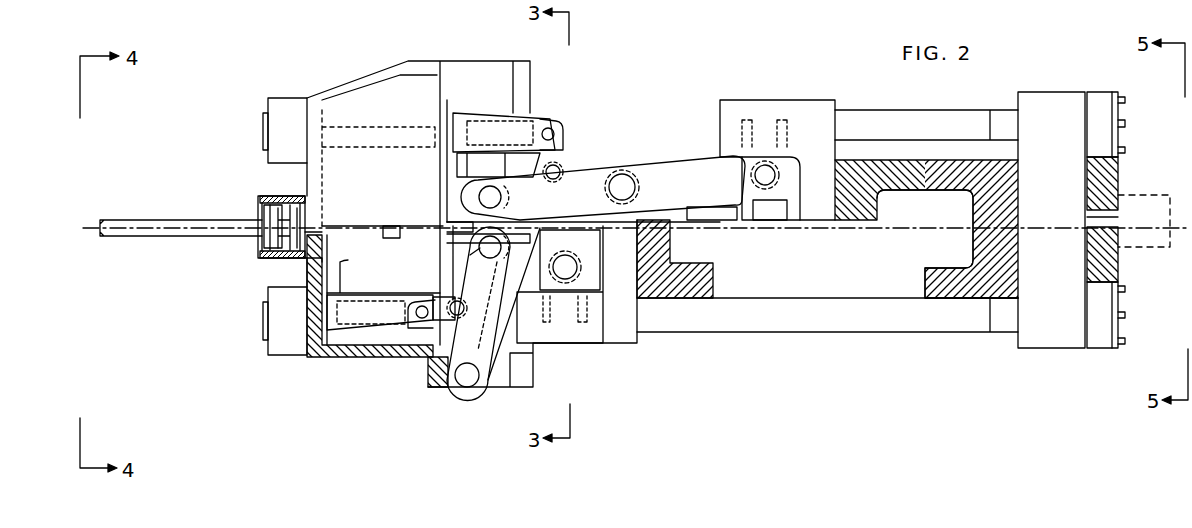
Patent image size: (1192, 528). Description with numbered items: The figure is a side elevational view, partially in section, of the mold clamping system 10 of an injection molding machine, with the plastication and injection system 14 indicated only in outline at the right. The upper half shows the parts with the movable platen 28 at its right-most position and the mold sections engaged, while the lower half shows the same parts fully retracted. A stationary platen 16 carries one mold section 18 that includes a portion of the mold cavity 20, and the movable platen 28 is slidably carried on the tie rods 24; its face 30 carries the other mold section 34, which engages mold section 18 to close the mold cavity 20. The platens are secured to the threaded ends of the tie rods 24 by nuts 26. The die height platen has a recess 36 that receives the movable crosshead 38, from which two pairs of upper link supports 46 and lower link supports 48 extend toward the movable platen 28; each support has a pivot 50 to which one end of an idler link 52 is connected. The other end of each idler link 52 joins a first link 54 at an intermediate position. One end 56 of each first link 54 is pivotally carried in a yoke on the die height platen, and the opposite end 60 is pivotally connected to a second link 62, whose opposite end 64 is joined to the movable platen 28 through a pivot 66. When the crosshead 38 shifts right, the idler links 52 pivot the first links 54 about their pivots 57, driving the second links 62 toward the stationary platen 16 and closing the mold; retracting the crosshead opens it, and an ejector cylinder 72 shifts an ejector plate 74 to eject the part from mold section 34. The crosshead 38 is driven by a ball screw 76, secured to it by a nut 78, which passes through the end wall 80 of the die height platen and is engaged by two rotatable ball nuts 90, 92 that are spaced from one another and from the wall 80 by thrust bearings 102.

The mold clamping system 10 is at (399, 51).
The plastication and injection system 14 is at (1133, 193).
The stationary platen 16 is at (1066, 94).
The mold section 18 is at (968, 290).
The mold cavity 20 is at (946, 190).
The tie rods 24 is at (778, 322).
The nuts 26 is at (292, 105).
The movable platen 28 is at (768, 108).
The face 30 is at (840, 142).
The mold section 34 is at (887, 170).
The recess 36 is at (323, 356).
The movable crosshead 38 is at (372, 281).
The upper link supports 46 is at (487, 120).
The lower link supports 48 is at (370, 351).
The pivot 50 is at (552, 128).
The idler links 52 is at (561, 166).
The first links 54 is at (588, 182).
The end 56 is at (478, 190).
The pivots 57 is at (497, 240).
The opposite ends 60 is at (478, 392).
The second links 62 is at (680, 170).
The opposite ends 64 is at (728, 120).
The pivots 66 is at (770, 168).
The ejector cylinder 72 is at (713, 221).
The ejector plate 74 is at (768, 222).
The ball screw 76 is at (166, 238).
The nut 78 is at (393, 226).
The end wall 80 is at (307, 262).
The ball nut 90 is at (258, 193).
The ball nut 92 is at (308, 200).
The thrust bearings 102 is at (278, 200).